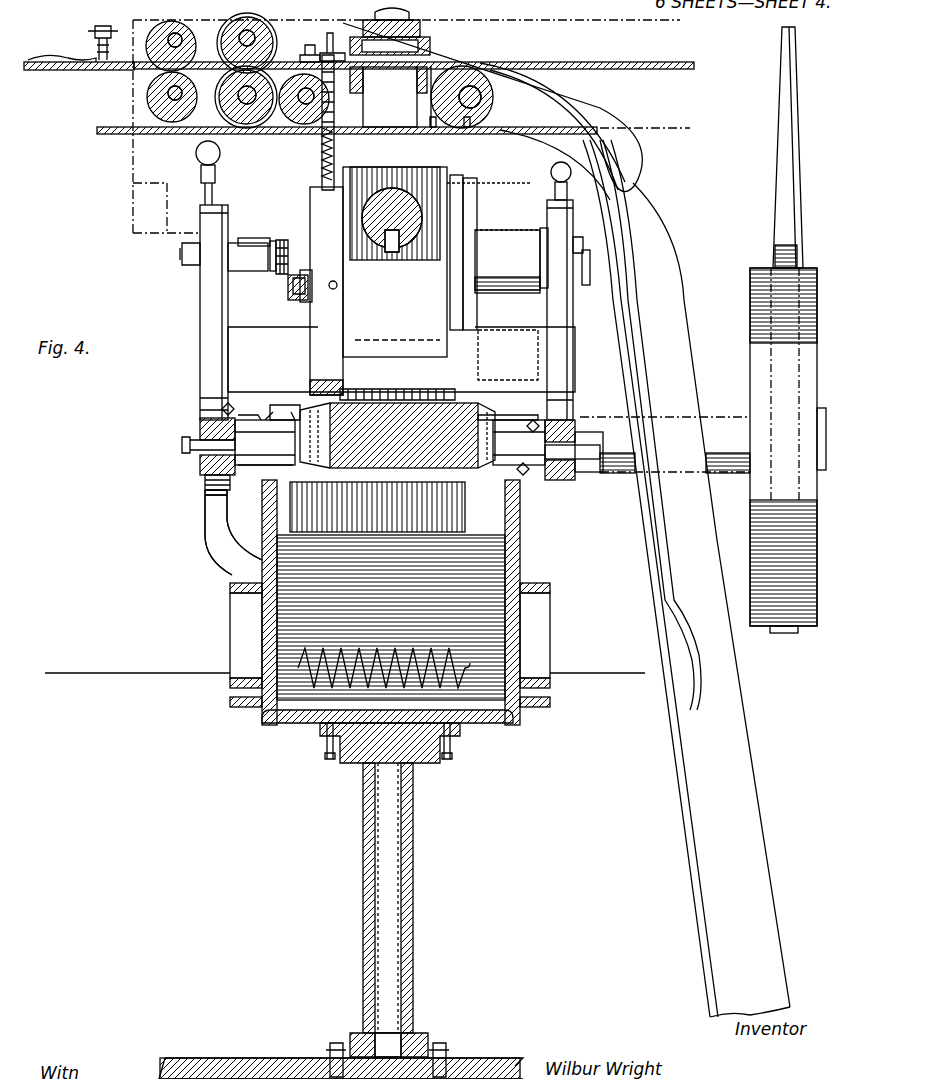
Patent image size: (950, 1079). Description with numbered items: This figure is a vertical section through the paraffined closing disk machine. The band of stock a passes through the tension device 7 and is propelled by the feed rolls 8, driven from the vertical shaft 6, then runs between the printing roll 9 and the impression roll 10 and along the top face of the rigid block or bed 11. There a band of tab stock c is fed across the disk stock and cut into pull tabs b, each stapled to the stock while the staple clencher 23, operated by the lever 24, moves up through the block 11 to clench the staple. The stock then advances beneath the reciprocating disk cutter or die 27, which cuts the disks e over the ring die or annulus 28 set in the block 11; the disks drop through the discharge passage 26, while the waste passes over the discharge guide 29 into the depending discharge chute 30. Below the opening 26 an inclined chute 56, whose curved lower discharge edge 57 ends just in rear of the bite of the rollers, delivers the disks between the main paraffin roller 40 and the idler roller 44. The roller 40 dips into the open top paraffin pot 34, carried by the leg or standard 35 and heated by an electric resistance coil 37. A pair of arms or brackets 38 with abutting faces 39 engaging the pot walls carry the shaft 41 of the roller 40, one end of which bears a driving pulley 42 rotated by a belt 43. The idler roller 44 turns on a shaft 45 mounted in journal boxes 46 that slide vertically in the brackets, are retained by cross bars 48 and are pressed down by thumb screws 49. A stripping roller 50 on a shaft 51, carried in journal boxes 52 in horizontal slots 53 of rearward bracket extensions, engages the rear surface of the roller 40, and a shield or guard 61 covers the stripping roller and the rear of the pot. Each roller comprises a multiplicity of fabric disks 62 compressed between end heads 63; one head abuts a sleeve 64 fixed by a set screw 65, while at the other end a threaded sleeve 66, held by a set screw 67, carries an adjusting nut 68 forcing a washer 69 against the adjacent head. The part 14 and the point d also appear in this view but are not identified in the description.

The vertical shaft 6 is at (300, 56).
The tension device 7 is at (85, 72).
The feed rolls 8 is at (165, 45).
The printing roll 9 is at (222, 48).
The impression roll 10 is at (222, 104).
The rigid bed, block or wall 11 is at (490, 62).
The clamp 14 is at (325, 36).
The plunger or staple clencher 23 is at (308, 122).
The lever 24 is at (292, 300).
The disk discharge passage 26 is at (434, 97).
The disk cutter, die or punch 27 is at (420, 62).
The ring die or annulus 28 is at (388, 97).
The discharge guide 29 is at (610, 118).
The depending discharge chute 30 is at (690, 868).
The paraffin pot 34 is at (540, 640).
The leg or standard 35 is at (400, 938).
The electric heating or resistance coil 37 is at (452, 690).
The arms or brackets 38 is at (578, 524).
The bearing or abutting faces 39 is at (258, 575).
The lower or main paraffin roller 40 is at (397, 416).
The shaft 41 is at (180, 445).
The driving pulley 42 is at (750, 316).
The belt 43 is at (775, 174).
The paraffin idler roller 44 is at (458, 188).
The shaft 45 is at (208, 266).
The journal boxes 46 is at (182, 250).
The cross bars 48 is at (258, 232).
The set or thumb screws 49 is at (218, 172).
The idler stripping roller 50 is at (577, 438).
The shaft 51 is at (205, 452).
The journal boxes 52 is at (215, 477).
The horizontal slots or guides 53 is at (228, 408).
The chute or guide 56 is at (470, 292).
The lower discharge edge 57 is at (397, 382).
The shield or guard 61 is at (200, 370).
The fabric disks 62 is at (398, 158).
The end heads 63 is at (463, 200).
The sleeve 64 is at (470, 215).
The set screw 65 is at (510, 347).
The sleeve 66 is at (260, 482).
The set screw 67 is at (240, 240).
The adjusting nut 68 is at (292, 240).
The washer 69 is at (310, 205).
The ribbon or band of stock a is at (648, 330).
The handle or pull tabs b is at (392, 252).
The ribbon or band of tab stock c is at (303, 42).
The reference point d is at (690, 14).
The disks e is at (418, 180).